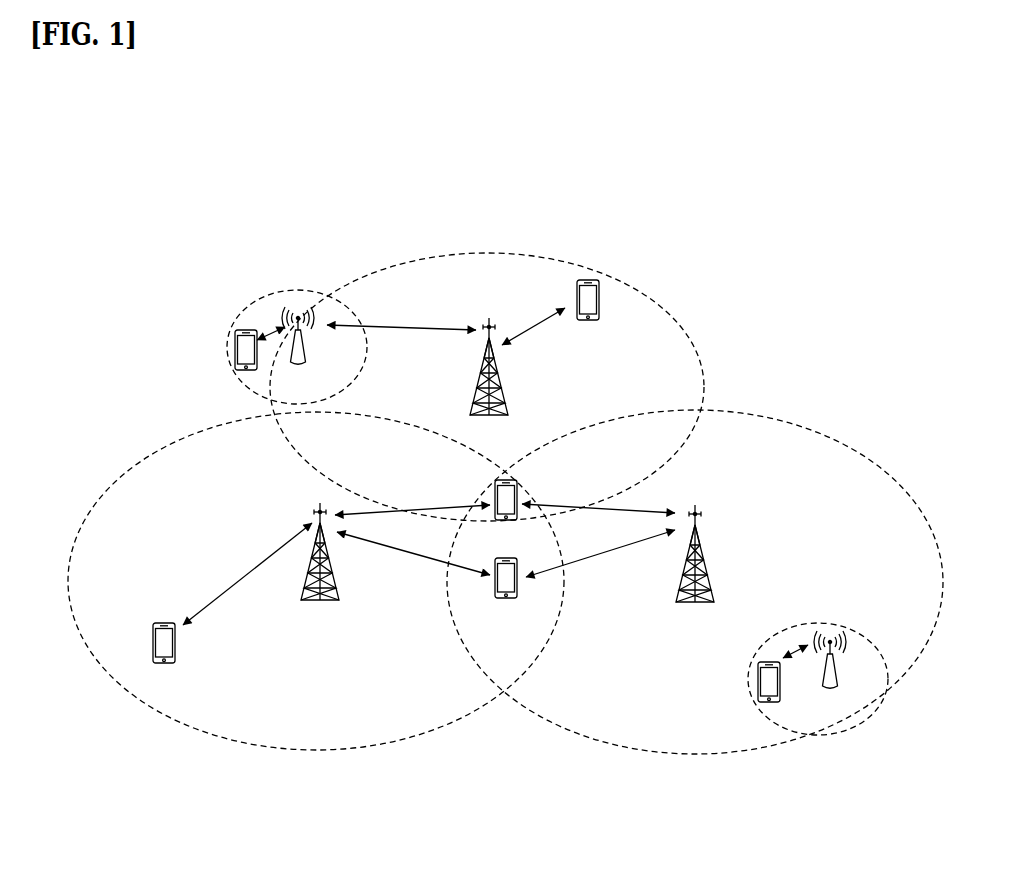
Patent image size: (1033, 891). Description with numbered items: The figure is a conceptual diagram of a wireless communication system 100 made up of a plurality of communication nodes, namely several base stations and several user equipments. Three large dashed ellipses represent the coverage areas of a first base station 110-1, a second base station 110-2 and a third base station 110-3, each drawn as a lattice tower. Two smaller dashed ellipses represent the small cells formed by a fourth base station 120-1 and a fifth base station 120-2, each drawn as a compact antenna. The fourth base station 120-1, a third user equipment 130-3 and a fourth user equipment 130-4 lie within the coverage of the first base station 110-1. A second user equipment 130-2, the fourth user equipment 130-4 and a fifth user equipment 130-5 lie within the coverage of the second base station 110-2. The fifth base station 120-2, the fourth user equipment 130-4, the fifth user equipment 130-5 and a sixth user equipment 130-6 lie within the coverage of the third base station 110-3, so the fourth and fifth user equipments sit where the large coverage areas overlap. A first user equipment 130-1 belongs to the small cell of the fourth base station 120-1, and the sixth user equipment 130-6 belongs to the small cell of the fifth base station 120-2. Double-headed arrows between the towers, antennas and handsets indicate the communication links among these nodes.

The wireless communication system 100 is at (500, 196).
The first base station 110-1 is at (503, 375).
The second base station 110-2 is at (320, 600).
The third base station 110-3 is at (708, 548).
The fourth base station 120-1 is at (298, 316).
The fifth base station 120-2 is at (830, 640).
The first user equipment 130-1 is at (235, 350).
The second user equipment 130-2 is at (165, 621).
The third user equipment 130-3 is at (584, 278).
The fourth user equipment 130-4 is at (517, 481).
The fifth user equipment 130-5 is at (507, 598).
The sixth user equipment 130-6 is at (757, 678).